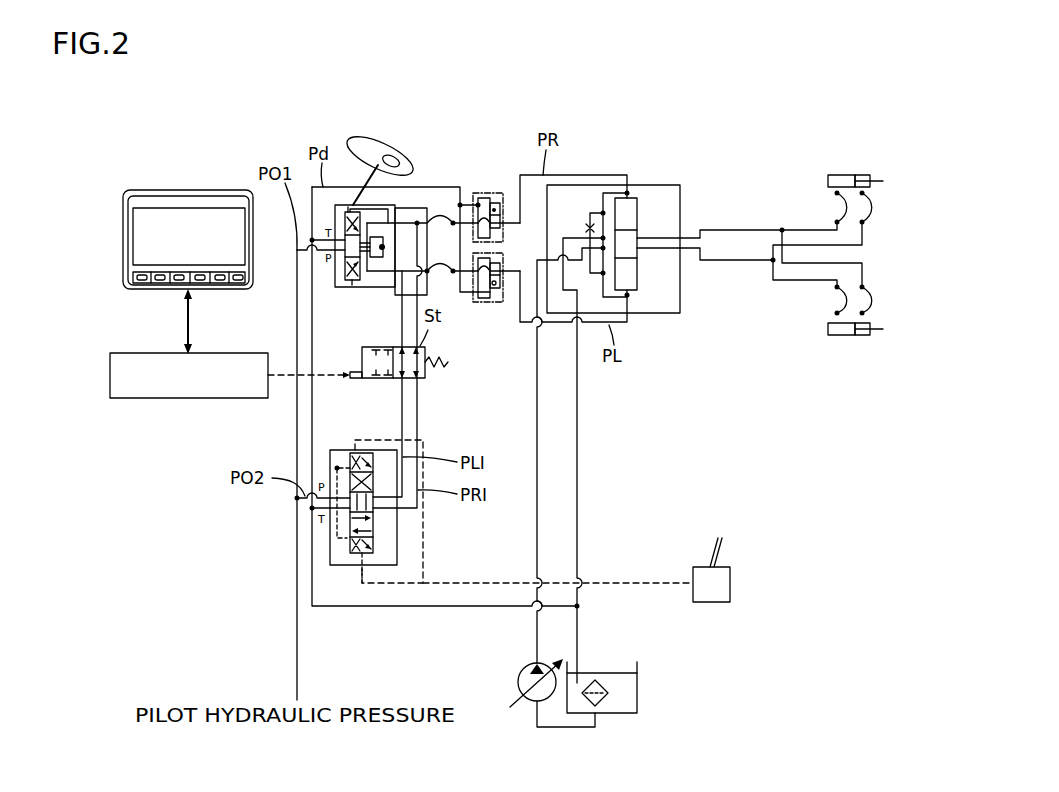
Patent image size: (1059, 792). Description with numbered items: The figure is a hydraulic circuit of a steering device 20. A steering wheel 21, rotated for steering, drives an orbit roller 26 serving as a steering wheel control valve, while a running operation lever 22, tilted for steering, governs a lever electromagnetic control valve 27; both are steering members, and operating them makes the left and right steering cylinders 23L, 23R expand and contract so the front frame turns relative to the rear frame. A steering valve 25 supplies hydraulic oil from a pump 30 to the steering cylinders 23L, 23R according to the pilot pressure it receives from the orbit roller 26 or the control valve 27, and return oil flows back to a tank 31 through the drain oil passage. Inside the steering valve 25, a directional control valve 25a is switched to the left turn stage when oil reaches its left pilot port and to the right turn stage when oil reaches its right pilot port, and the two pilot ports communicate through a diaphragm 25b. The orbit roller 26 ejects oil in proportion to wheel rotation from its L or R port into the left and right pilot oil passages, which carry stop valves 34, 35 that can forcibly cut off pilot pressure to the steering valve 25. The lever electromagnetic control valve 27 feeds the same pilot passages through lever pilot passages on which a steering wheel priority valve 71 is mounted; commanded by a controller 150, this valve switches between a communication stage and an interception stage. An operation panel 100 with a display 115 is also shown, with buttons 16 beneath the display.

The steering device 20 is at (748, 96).
The operation panel 100 is at (162, 237).
The display 115 is at (138, 235).
The operation switches 16 is at (178, 284).
The controller 150 is at (142, 400).
The steering wheel 21 is at (396, 153).
The orbit roller 26 is at (393, 200).
The stop valve 34 is at (500, 192).
The stop valve 35 is at (500, 303).
The steering valve 25 is at (638, 228).
The directional control valve 25a is at (638, 211).
The diaphragm 25b is at (589, 226).
The right steering cylinder 23R is at (842, 173).
The left steering cylinder 23L is at (842, 337).
The steering wheel priority valve 71 is at (381, 345).
The lever electromagnetic control valve 27 is at (398, 543).
The running operation lever 22 is at (712, 565).
The pump 30 is at (518, 673).
The tank 31 is at (638, 686).